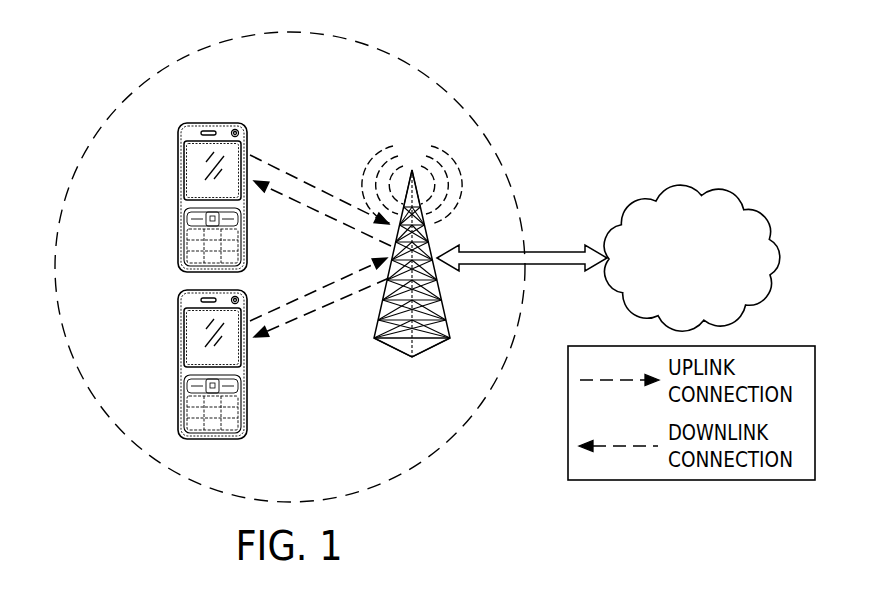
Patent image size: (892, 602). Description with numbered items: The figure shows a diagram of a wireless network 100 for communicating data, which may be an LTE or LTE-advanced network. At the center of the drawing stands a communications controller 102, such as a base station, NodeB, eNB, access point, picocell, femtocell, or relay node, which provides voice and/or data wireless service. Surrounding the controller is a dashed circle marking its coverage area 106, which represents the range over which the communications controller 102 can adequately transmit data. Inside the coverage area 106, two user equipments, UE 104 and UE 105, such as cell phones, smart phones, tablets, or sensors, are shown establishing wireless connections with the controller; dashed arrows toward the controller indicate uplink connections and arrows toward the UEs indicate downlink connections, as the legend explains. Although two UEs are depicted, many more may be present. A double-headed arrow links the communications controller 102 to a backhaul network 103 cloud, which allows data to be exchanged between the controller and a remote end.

The network 100 is at (572, 107).
The communications controller 102 is at (435, 340).
The backhaul network 103 is at (690, 188).
The UE 104 is at (178, 197).
The UE 105 is at (178, 362).
The coverage area 106 is at (179, 56).